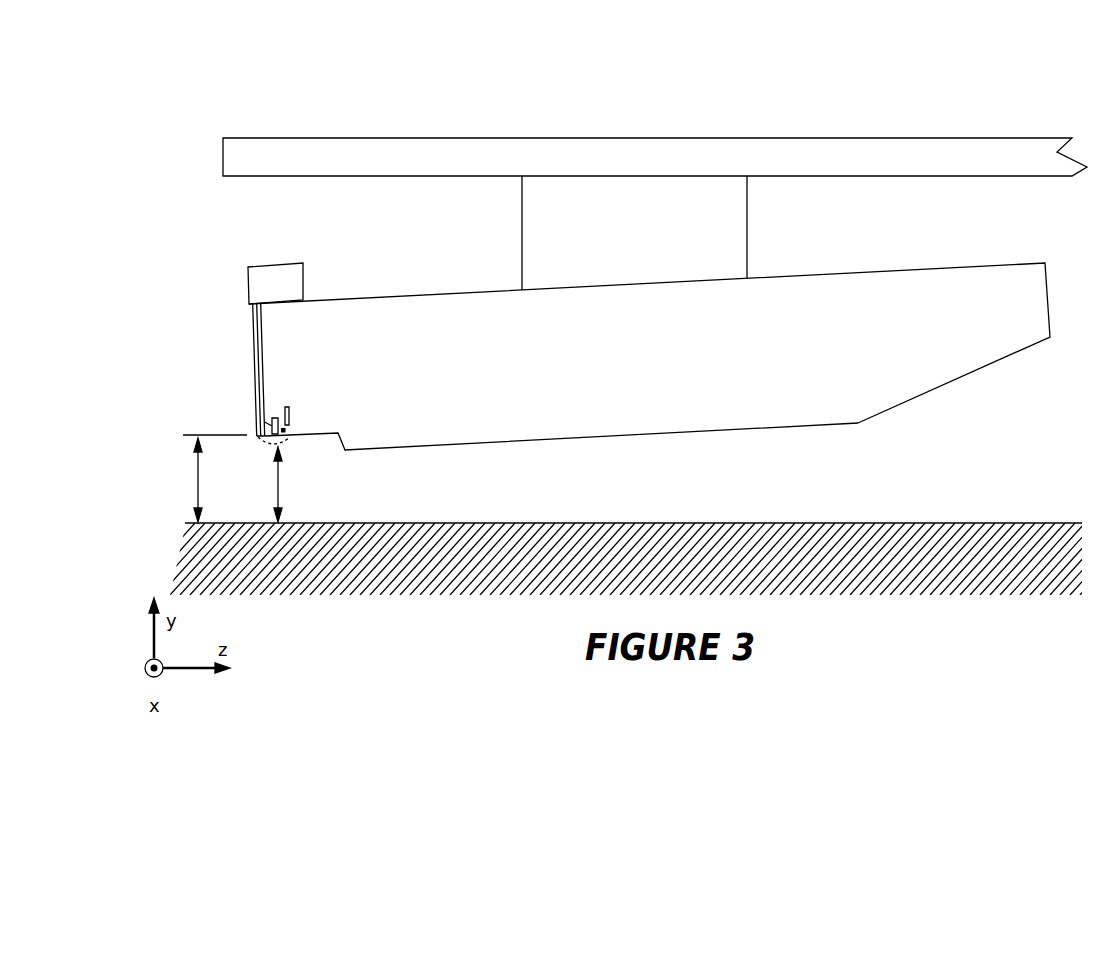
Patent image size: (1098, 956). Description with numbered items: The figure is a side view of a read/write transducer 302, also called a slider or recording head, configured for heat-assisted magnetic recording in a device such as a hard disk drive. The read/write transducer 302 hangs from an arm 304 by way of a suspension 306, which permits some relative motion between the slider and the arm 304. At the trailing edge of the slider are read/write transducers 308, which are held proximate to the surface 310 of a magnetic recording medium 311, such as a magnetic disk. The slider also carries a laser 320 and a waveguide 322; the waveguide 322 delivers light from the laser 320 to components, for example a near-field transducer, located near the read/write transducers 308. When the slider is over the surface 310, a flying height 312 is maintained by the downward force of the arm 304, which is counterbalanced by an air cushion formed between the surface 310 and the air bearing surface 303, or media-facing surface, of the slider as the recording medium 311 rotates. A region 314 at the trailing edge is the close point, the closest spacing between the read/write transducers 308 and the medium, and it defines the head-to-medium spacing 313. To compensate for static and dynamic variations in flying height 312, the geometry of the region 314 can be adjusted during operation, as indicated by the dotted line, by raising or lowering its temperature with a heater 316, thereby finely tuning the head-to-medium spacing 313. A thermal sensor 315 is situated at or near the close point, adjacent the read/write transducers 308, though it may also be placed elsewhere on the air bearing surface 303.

The read/write transducer 302 is at (915, 270).
The air bearing surface 303 is at (468, 446).
The arm 304 is at (978, 147).
The suspension 306 is at (749, 216).
The read/write transducers 308 is at (262, 408).
The surface 310 is at (918, 523).
The magnetic recording medium 311 is at (935, 578).
The flying height 312 is at (196, 478).
The head-to-medium spacing 313 is at (256, 484).
The close point region 314 is at (288, 444).
The thermal sensor 315 is at (286, 431).
The heater 316 is at (263, 383).
The laser 320 is at (276, 275).
The waveguide 322 is at (258, 340).